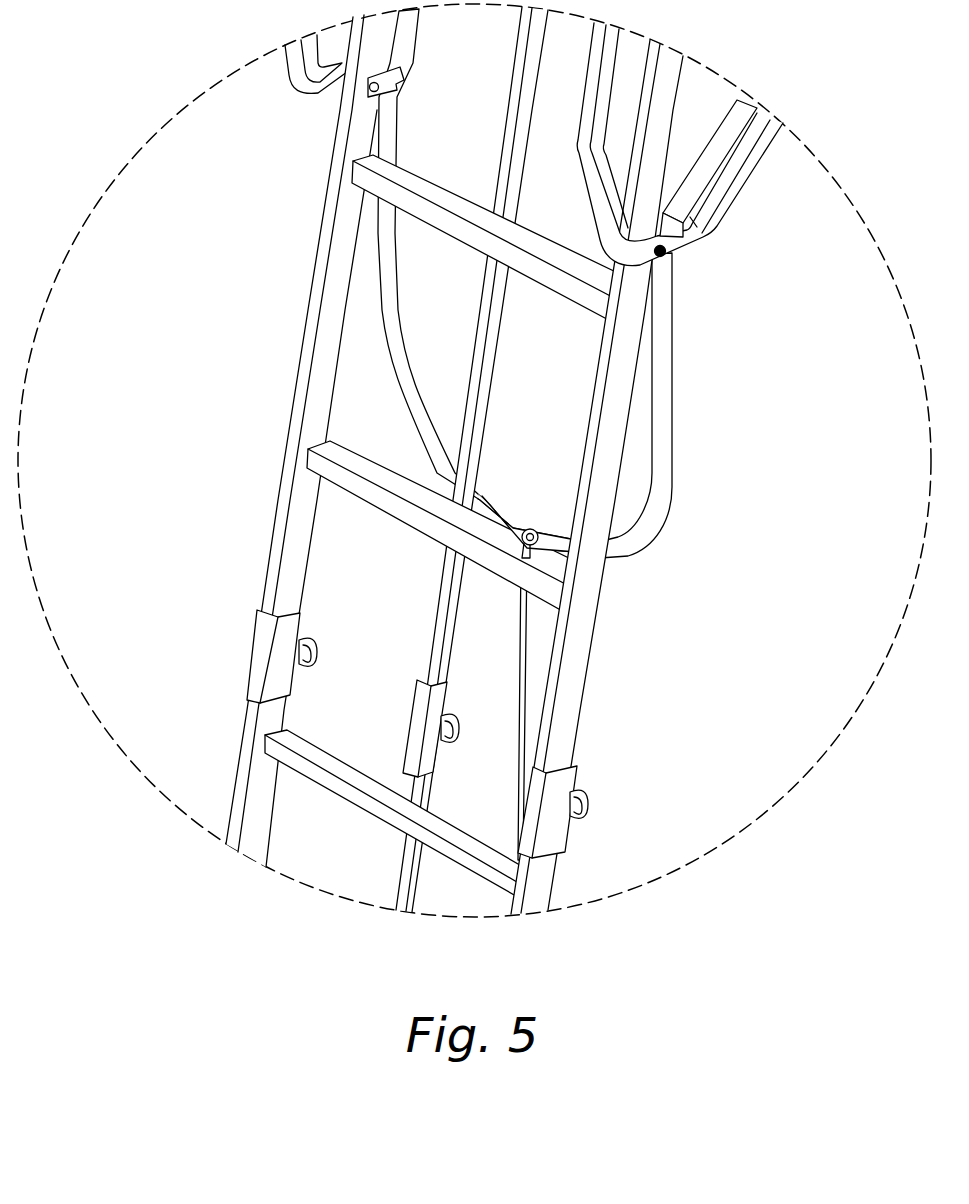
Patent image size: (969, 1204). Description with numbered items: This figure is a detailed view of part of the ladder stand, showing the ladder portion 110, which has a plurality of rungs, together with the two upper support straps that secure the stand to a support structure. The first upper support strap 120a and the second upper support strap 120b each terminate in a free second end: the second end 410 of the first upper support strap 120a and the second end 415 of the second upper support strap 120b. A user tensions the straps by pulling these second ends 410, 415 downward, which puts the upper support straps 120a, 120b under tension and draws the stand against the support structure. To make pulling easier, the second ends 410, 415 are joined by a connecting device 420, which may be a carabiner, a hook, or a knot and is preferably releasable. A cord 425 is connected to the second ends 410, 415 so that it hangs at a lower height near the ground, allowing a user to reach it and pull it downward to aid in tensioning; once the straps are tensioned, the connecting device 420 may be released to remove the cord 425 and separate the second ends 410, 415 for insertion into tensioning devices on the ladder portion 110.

The ladder portion 110 is at (304, 377).
The first upper support strap 120a is at (392, 322).
The second upper support strap 120b is at (658, 508).
The second end of the first upper support strap 410 is at (418, 412).
The second end of the second upper support strap 415 is at (654, 456).
The connecting device 420 is at (525, 527).
The cord 425 is at (515, 713).